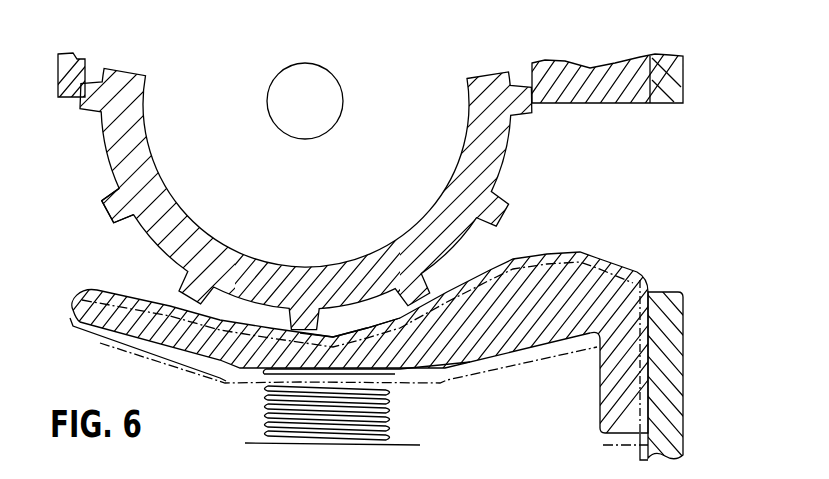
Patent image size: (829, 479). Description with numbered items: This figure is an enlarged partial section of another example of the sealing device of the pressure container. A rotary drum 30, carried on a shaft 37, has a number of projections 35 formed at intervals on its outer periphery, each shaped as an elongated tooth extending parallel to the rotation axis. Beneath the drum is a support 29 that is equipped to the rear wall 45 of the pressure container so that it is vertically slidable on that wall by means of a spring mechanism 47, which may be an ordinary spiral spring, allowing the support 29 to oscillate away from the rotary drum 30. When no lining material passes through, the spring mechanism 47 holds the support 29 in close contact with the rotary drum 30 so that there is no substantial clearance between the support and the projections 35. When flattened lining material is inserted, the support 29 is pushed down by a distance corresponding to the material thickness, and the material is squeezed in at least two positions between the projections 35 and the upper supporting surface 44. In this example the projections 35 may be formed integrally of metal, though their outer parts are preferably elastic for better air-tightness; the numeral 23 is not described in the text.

The housing 23 is at (633, 148).
The support 29 is at (577, 279).
The rotary drum 30 is at (107, 182).
The projections 35 is at (113, 212).
The shaft 37 is at (330, 114).
The upper supporting surface 44 is at (363, 332).
The rear wall 45 is at (672, 324).
The spring mechanism 47 is at (382, 402).